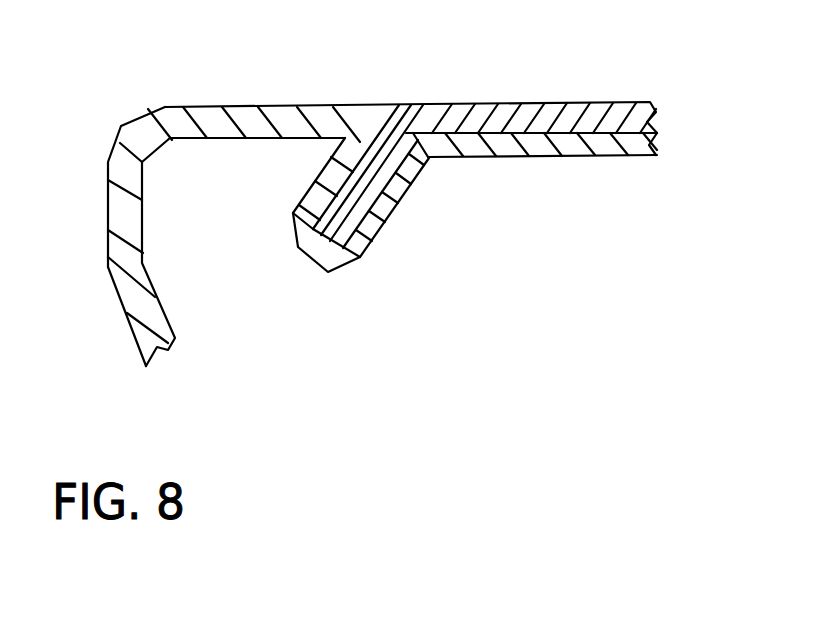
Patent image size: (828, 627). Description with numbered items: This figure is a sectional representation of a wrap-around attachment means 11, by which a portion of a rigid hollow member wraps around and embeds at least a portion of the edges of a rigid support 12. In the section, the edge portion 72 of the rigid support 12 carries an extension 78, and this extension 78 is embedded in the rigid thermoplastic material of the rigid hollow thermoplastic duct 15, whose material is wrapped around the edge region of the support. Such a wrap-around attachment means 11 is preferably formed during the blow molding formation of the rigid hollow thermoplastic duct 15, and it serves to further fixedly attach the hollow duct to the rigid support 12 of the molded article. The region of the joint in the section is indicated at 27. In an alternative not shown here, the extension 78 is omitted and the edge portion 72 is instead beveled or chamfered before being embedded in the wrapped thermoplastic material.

The wrap-around attachment means 11 is at (338, 337).
The rigid support 12 is at (597, 102).
The rigid hollow thermoplastic duct 15 is at (248, 105).
The joint 27 is at (536, 335).
The edge portion 72 is at (432, 104).
The extension 78 is at (380, 173).